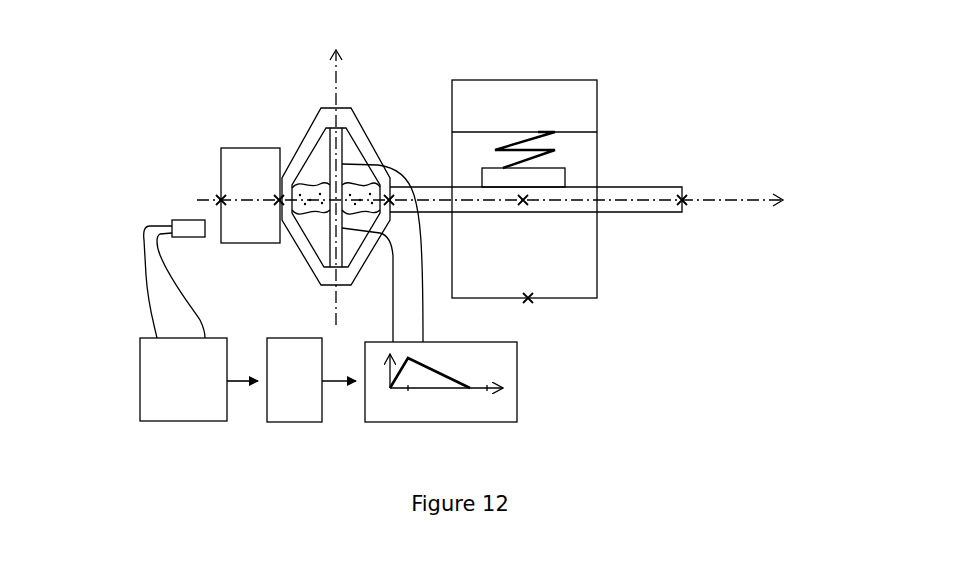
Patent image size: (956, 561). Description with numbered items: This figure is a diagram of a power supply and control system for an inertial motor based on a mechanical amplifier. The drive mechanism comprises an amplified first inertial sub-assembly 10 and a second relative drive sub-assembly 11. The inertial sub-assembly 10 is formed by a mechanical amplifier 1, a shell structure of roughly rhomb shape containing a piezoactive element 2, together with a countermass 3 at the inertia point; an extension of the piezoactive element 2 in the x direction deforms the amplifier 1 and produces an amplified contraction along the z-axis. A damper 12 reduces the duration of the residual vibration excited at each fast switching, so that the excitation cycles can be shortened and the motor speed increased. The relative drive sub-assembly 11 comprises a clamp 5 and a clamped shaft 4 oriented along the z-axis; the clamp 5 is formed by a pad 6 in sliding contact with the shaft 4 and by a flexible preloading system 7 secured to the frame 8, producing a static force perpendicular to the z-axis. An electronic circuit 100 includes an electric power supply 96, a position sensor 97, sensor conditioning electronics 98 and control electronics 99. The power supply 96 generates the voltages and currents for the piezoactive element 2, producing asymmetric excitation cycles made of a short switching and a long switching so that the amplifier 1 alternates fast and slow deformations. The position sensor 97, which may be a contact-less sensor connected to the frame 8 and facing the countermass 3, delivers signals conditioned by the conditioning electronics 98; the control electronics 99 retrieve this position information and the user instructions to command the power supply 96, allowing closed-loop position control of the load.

The mechanical amplifier 1 is at (315, 117).
The piezoactive element 2 is at (330, 222).
The countermass 3 is at (233, 148).
The shaft 4 is at (412, 187).
The clamp 5 is at (616, 121).
The pad 6 is at (567, 175).
The flexible preloading system 7 is at (555, 138).
The frame 8 is at (597, 80).
The first inertial sub-assembly 10 is at (244, 80).
The second relative drive sub-assembly 11 is at (702, 70).
The damper 12 is at (310, 182).
The electric power supply 96 is at (517, 378).
The position sensor 97 is at (176, 220).
The sensor conditioning electronics 98 is at (140, 352).
The control electronics 99 is at (273, 337).
The electronic circuit 100 is at (78, 161).